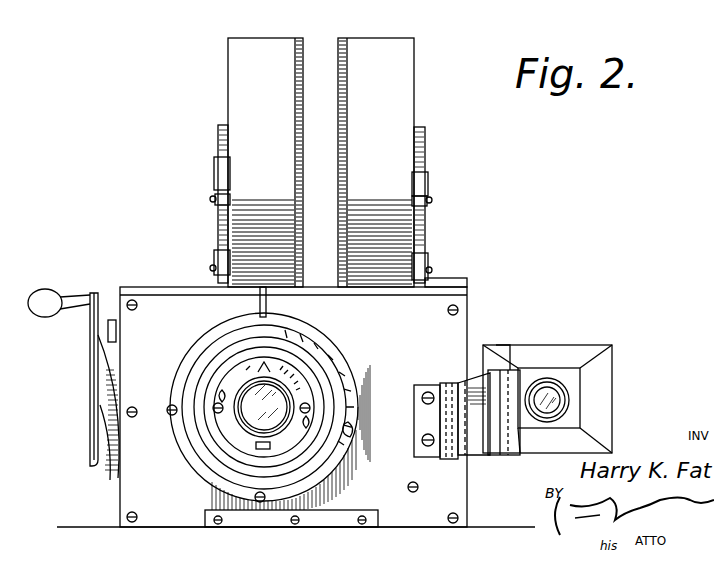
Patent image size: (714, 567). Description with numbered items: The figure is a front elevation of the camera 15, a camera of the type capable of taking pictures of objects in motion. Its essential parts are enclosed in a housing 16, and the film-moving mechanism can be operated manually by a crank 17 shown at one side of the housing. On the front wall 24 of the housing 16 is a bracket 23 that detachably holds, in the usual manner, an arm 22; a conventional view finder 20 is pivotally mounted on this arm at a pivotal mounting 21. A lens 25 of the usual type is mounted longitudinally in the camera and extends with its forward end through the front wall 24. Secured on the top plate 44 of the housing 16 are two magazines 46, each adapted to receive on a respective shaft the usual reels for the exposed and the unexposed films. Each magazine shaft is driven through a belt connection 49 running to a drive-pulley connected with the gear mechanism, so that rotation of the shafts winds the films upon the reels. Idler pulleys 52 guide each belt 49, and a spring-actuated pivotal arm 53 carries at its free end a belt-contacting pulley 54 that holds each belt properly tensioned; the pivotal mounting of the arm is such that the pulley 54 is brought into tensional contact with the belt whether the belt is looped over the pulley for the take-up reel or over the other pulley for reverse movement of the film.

The camera 15 is at (483, 247).
The housing 16 is at (121, 285).
The crank 17 is at (92, 358).
The view finder 20 is at (615, 377).
The pivotal mounting 21 is at (505, 408).
The arm 22 is at (472, 440).
The bracket 23 is at (423, 421).
The front wall 24 is at (292, 413).
The lens 25 is at (247, 424).
The top plate 44 is at (190, 293).
The magazines 46 is at (363, 43).
The belt connection 49 is at (222, 127).
The idler pulleys 52 is at (217, 262).
The spring-actuated pivotal arm 53 is at (214, 208).
The belt-contacting pulley 54 is at (217, 180).